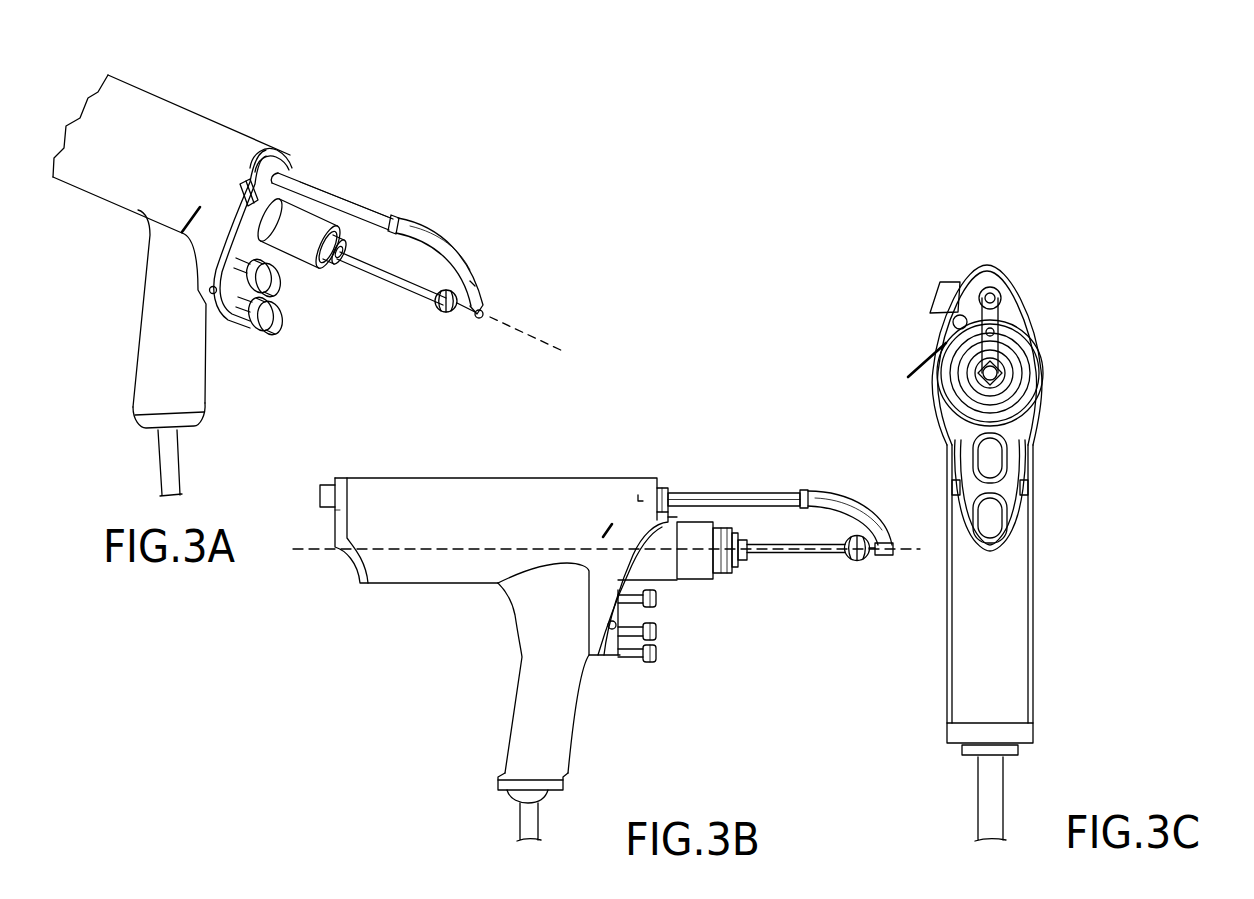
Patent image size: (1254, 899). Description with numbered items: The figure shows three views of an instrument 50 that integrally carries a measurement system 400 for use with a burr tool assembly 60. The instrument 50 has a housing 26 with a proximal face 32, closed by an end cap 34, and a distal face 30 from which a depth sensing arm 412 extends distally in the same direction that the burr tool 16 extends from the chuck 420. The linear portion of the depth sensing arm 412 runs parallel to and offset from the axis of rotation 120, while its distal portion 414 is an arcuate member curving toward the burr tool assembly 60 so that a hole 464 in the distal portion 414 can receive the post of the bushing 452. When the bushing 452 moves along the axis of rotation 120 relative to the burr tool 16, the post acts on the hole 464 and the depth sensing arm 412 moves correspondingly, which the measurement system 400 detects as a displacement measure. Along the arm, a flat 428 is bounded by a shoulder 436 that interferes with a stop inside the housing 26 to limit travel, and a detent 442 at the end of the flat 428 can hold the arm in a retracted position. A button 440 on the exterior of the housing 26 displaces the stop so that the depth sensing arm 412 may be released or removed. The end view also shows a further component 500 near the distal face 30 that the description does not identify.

In FIG. 3A, the burr tool 16 is at (412, 292).
In FIG. 3B, the burr tool 16 is at (790, 545).
In FIG. 3A, the housing 26 is at (123, 188).
In FIG. 3B, the housing 26 is at (446, 585).
In FIG. 3C, the housing 26 is at (1022, 313).
In FIG. 3A, the distal face 30 is at (284, 163).
In FIG. 3B, the distal face 30 is at (666, 489).
In FIG. 3C, the distal face 30 is at (1015, 292).
In FIG. 3B, the proximal face 32 is at (333, 512).
In FIG. 3B, the end cap 34 is at (328, 483).
In FIG. 3A, the instrument 50 is at (320, 167).
In FIG. 3B, the instrument 50 is at (522, 471).
In FIG. 3C, the instrument 50 is at (922, 328).
In FIG. 3A, the burr tool assembly 60 is at (412, 308).
In FIG. 3B, the burr tool assembly 60 is at (827, 566).
In FIG. 3A, the axis of rotation 120 is at (537, 344).
In FIG. 3B, the axis of rotation 120 is at (918, 546).
In FIG. 3A, the measurement system 400 is at (200, 101).
In FIG. 3B, the measurement system 400 is at (710, 480).
In FIG. 3C, the measurement system 400 is at (922, 387).
In FIG. 3A, the depth sensing arm 412 is at (362, 216).
In FIG. 3B, the depth sensing arm 412 is at (766, 493).
In FIG. 3C, the depth sensing arm 412 is at (997, 287).
In FIG. 3A, the distal portion 414 is at (462, 259).
In FIG. 3B, the distal portion 414 is at (858, 495).
In FIG. 3C, the distal portion 414 is at (1032, 338).
In FIG. 3A, the chuck 420 is at (297, 272).
In FIG. 3B, the chuck 420 is at (690, 580).
In FIG. 3C, the chuck 420 is at (1005, 374).
In FIG. 3A, the flat 428 is at (328, 205).
In FIG. 3B, the flat 428 is at (729, 493).
In FIG. 3A, the shoulder 436 is at (400, 222).
In FIG. 3B, the shoulder 436 is at (805, 490).
In FIG. 3A, the button 440 is at (255, 195).
In FIG. 3B, the button 440 is at (658, 494).
In FIG. 3C, the button 440 is at (943, 287).
In FIG. 3A, the detent 442 is at (410, 223).
In FIG. 3B, the detent 442 is at (818, 494).
In FIG. 3A, the bushing 452 is at (468, 322).
In FIG. 3B, the bushing 452 is at (882, 556).
In FIG. 3A, the hole 464 is at (472, 285).
In FIG. 3C, the pin 500 is at (964, 315).